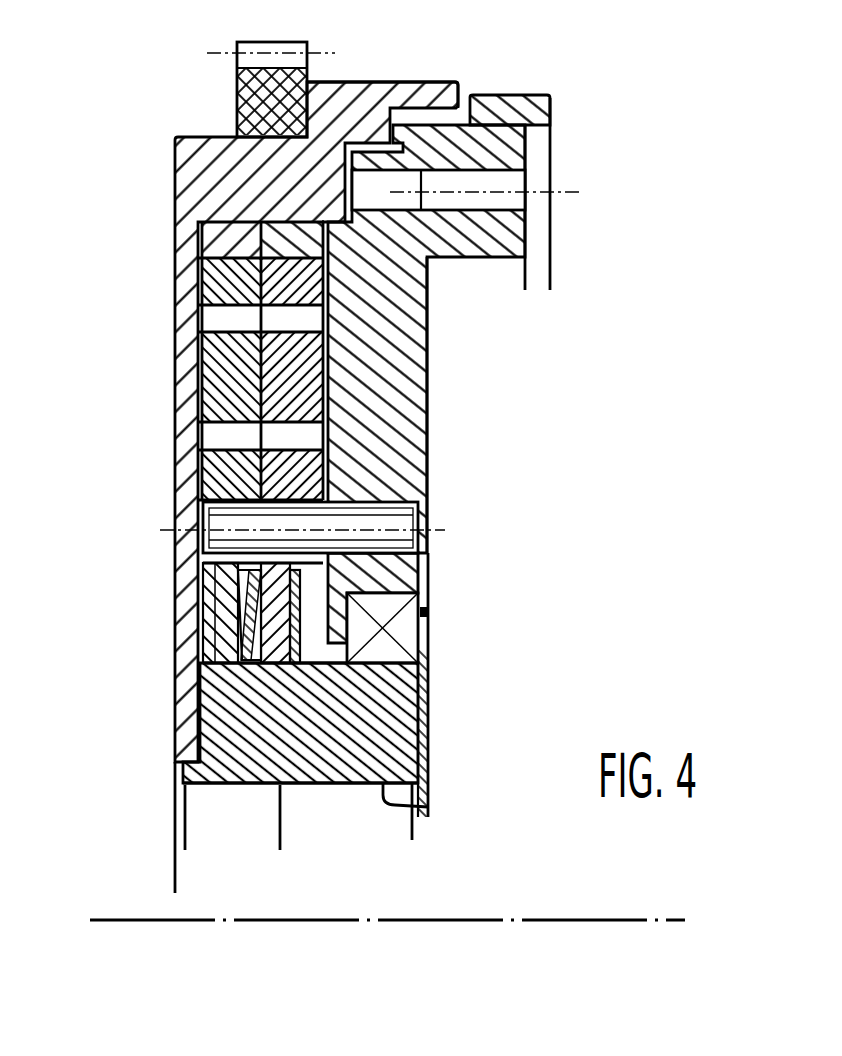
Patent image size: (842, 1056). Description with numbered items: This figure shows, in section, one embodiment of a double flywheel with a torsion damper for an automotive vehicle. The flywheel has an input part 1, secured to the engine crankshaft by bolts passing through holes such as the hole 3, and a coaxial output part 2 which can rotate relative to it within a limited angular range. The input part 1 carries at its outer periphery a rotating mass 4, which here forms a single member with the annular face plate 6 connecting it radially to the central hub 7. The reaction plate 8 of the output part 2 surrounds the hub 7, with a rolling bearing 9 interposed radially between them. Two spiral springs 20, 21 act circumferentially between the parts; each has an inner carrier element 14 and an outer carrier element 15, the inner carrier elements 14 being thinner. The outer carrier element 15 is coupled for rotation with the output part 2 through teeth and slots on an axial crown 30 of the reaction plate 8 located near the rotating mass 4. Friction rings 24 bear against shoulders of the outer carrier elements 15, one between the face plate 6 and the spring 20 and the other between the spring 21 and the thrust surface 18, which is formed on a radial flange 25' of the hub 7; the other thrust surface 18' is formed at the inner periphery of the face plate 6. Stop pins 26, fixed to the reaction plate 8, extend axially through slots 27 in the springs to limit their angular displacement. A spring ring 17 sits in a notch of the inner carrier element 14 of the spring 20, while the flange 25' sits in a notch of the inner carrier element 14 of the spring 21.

The input part 1 is at (160, 191).
The output part 2 is at (468, 362).
The bolt hole 3 is at (428, 807).
The rotating mass 4 is at (367, 82).
The face plate 6 is at (225, 758).
The hub 7 is at (195, 775).
The reaction plate 8 is at (428, 460).
The bearing 9 is at (403, 633).
The inner carrier element 14 is at (225, 605).
The outer carrier element 15 is at (292, 278).
The spring ring 17 is at (238, 665).
The thrust surface 18 is at (345, 703).
The thrust surface 18' is at (180, 637).
The spiral spring 20 is at (218, 374).
The spiral spring 21 is at (309, 380).
The friction ring 24 is at (208, 593).
The radial flange 25' is at (469, 685).
The stop pin 26 is at (400, 520).
The slot 27 is at (218, 445).
The axial crown 30 is at (225, 237).